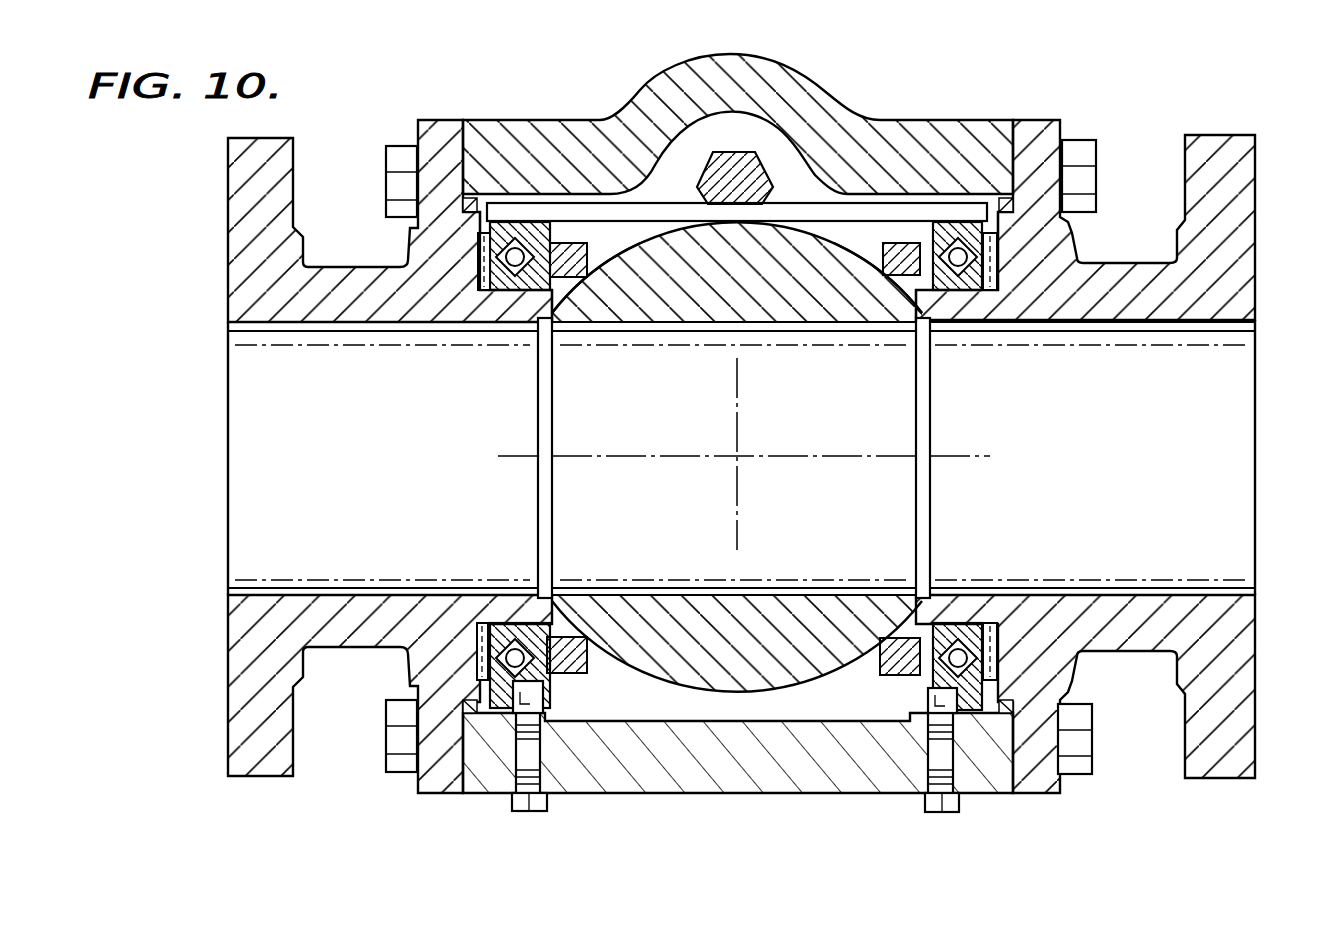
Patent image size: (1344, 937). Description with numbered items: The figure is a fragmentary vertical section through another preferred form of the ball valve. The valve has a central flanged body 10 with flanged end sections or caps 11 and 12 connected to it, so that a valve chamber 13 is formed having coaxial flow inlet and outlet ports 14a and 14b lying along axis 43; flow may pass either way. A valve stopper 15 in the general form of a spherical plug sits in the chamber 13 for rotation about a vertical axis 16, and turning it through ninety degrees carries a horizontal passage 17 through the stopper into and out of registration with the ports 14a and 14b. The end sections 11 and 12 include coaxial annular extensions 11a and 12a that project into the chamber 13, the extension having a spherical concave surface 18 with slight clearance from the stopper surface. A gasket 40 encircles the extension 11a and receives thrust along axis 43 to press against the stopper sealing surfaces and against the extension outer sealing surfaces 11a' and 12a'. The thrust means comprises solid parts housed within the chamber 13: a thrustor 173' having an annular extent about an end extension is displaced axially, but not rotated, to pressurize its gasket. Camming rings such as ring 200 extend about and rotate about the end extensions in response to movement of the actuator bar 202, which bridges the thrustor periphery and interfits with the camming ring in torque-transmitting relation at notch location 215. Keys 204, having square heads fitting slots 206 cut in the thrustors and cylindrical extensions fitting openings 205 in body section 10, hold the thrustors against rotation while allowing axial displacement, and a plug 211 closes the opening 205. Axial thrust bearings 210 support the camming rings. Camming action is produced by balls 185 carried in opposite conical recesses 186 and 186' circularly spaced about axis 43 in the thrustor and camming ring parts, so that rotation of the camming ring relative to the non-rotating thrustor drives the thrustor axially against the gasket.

The flanged body 10 is at (777, 806).
The end section 11 is at (214, 688).
The end section 12 is at (1265, 266).
The annular extension 11a is at (441, 296).
The extension outer sealing surface 11a' is at (636, 278).
The annular extension 12a is at (974, 301).
The extension outer sealing surface 12a' is at (847, 278).
The valve chamber 13 is at (727, 704).
The flow inlet port 14a is at (383, 458).
The flow outlet port 14b is at (1092, 458).
The valve stopper 15 is at (796, 596).
The axis 16 is at (742, 380).
The horizontal passage 17 is at (734, 458).
The spherical concave surface 18 is at (557, 318).
The gasket 40 is at (557, 636).
The axis 43 is at (992, 458).
The thrustor 173' is at (478, 353).
The balls 185 is at (478, 254).
The conical recess 186 is at (419, 232).
The conical recess 186' is at (557, 175).
The camming ring 200 is at (478, 283).
The actuator bar 202 is at (846, 205).
The key 204 is at (575, 742).
The opening 205 is at (518, 737).
The slot 206 is at (543, 694).
The axial thrust bearing 210 is at (477, 648).
The plug 211 is at (928, 780).
The notch location 215 is at (508, 225).